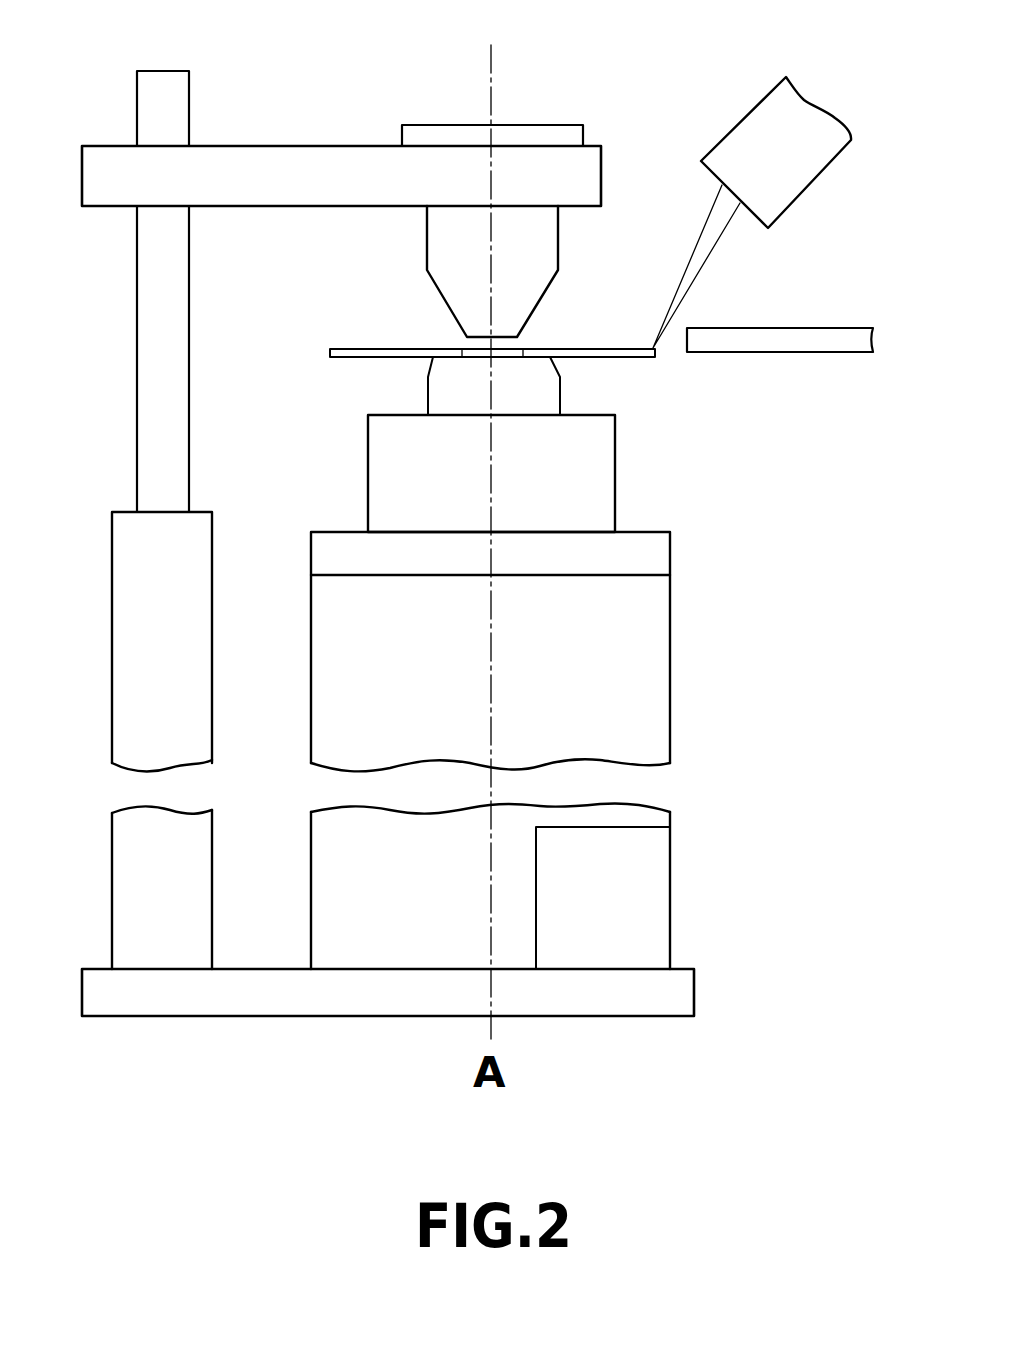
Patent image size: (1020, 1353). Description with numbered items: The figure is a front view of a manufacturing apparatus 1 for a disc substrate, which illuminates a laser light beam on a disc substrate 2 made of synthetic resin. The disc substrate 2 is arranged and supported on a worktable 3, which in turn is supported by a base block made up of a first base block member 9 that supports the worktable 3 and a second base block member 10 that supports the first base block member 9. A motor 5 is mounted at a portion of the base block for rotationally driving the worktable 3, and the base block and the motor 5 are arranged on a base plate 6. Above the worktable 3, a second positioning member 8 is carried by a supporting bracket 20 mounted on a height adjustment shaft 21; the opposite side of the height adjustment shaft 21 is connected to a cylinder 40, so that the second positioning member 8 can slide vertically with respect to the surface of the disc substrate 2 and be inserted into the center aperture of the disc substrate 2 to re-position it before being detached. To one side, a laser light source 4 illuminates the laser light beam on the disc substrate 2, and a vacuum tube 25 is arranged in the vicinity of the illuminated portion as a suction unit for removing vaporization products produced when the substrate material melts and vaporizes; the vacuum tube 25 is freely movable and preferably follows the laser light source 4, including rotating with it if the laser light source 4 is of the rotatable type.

The manufacturing apparatus 1 is at (642, 126).
The disc substrate 2 is at (347, 360).
The worktable 3 is at (628, 471).
The laser light source 4 is at (795, 170).
The motor 5 is at (655, 892).
The base plate 6 is at (678, 994).
The second positioning member 8 is at (540, 247).
The first base block member 9 is at (652, 550).
The second base block member 10 is at (652, 692).
The supporting bracket 20 is at (585, 176).
The height adjustment shaft 21 is at (180, 111).
The vacuum tube 25 is at (779, 337).
The cylinder 40 is at (117, 612).